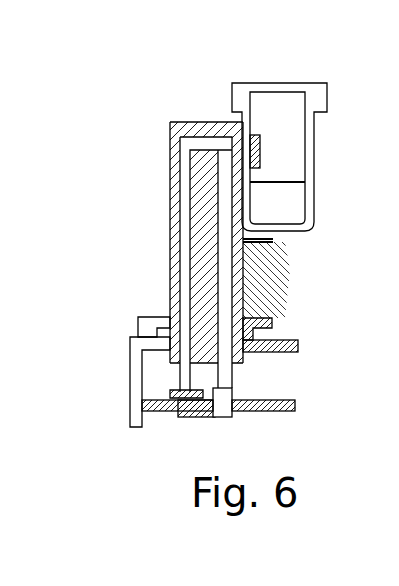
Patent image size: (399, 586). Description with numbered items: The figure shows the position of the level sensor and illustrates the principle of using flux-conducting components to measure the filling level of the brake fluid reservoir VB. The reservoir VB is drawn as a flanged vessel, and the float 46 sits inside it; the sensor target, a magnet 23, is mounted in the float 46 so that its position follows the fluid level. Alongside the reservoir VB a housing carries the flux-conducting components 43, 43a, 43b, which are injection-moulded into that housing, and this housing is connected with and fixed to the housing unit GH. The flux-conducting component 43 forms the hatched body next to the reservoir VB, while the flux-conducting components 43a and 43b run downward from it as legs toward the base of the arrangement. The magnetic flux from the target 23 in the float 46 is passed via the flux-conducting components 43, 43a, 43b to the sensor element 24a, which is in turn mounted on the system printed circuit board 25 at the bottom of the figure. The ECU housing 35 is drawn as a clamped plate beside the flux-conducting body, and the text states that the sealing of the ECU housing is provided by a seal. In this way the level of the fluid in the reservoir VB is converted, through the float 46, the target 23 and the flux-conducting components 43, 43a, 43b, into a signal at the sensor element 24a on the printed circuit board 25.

The brake fluid reservoir VB is at (273, 83).
The float 46 is at (288, 137).
The target (magnet) 23 is at (290, 175).
The housing unit GH is at (258, 250).
The flux-conducting component 43 is at (263, 281).
The flux-conducting component 43a is at (178, 242).
The flux-conducting component 43b is at (183, 418).
The ECU housing 35 is at (298, 344).
The system printed circuit board 25 is at (298, 405).
The sensor element 24a is at (170, 412).